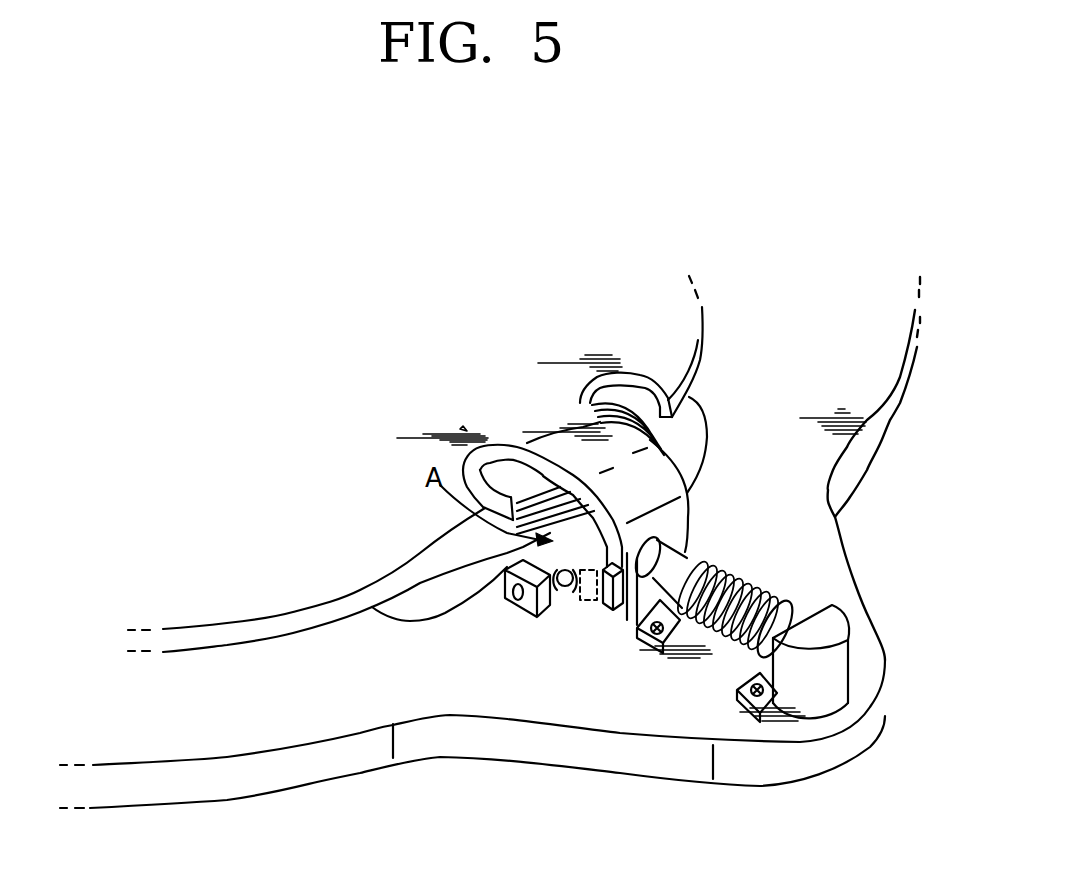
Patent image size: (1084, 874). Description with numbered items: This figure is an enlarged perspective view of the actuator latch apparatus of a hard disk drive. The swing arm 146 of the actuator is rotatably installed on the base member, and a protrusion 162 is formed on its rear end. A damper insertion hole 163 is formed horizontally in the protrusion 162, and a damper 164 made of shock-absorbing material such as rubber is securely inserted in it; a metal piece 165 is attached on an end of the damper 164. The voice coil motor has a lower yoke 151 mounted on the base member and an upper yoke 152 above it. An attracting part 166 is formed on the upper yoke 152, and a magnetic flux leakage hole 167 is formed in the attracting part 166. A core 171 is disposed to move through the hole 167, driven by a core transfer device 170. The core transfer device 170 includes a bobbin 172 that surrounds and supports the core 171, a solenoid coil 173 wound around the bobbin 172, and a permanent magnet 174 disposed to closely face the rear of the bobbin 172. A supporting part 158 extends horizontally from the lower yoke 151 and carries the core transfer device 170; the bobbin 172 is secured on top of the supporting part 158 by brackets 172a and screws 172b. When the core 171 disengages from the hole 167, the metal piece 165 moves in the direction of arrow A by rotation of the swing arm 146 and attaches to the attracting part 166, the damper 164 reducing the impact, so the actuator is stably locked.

The swing arm 146 is at (400, 607).
The lower yoke 151 is at (317, 763).
The upper yoke 152 is at (690, 385).
The supporting part 158 is at (823, 753).
The protrusion 162 is at (543, 620).
The damper insertion hole 163 is at (520, 608).
The damper 164 is at (563, 597).
The metal piece 165 is at (573, 603).
The attracting part 166 is at (690, 487).
The magnetic flux leakage hole 167 is at (690, 515).
The core transfer device 170 is at (813, 593).
The core 171 is at (640, 580).
The bobbin 172 is at (690, 556).
The brackets 172a is at (670, 650).
The screws 172b is at (743, 690).
The solenoid coil 173 is at (763, 590).
The permanent magnet 174 is at (837, 650).